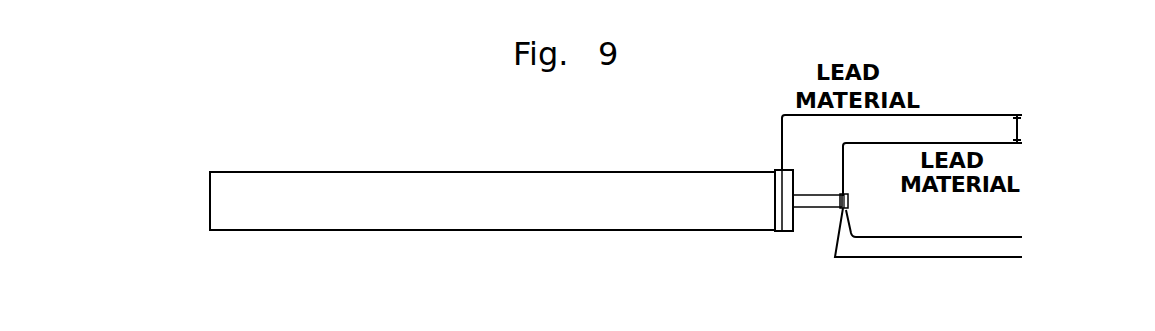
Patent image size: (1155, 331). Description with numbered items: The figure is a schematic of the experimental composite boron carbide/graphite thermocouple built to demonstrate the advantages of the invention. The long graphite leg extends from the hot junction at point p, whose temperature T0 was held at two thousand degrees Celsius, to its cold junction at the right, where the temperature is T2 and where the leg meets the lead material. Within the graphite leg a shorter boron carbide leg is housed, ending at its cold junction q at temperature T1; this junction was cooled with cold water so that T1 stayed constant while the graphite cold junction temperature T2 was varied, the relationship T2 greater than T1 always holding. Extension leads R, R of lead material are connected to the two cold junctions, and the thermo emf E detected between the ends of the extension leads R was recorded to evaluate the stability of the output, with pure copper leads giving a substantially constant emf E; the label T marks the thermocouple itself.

The hot junction p is at (210, 200).
The temperature of the hot junction T0 is at (222, 189).
The temperature of the cold junction of the graphite leg T2 is at (770, 189).
The lead wire connection T is at (789, 154).
The temperature of the cold junction of the B4C leg T1 is at (817, 190).
The cold junction of the B4C leg q is at (928, 200).
The thermo emf E is at (1025, 130).
The extension leads R is at (1016, 131).